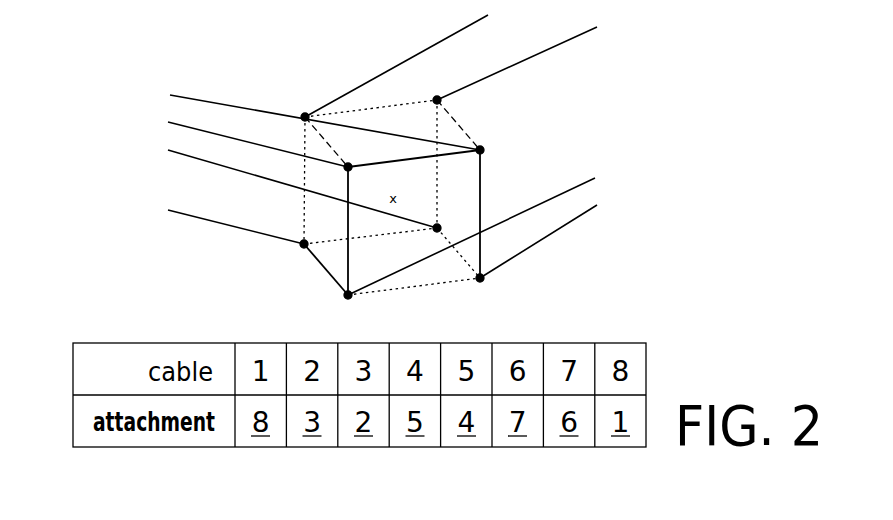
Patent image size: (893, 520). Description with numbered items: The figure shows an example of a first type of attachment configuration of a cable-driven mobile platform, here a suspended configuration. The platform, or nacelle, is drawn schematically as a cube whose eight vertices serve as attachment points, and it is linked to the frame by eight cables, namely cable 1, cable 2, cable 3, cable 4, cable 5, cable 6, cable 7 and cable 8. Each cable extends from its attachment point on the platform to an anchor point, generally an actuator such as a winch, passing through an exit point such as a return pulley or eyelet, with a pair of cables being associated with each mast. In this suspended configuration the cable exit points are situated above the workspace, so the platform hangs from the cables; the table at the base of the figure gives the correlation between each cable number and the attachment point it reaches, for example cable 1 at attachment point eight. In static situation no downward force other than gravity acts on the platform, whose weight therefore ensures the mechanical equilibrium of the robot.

The cable 1 is at (235, 228).
The cable 2 is at (227, 105).
The cable 3 is at (222, 166).
The cable 4 is at (192, 125).
The cable 5 is at (518, 257).
The cable 6 is at (351, 89).
The cable 7 is at (572, 185).
The cable 8 is at (517, 67).